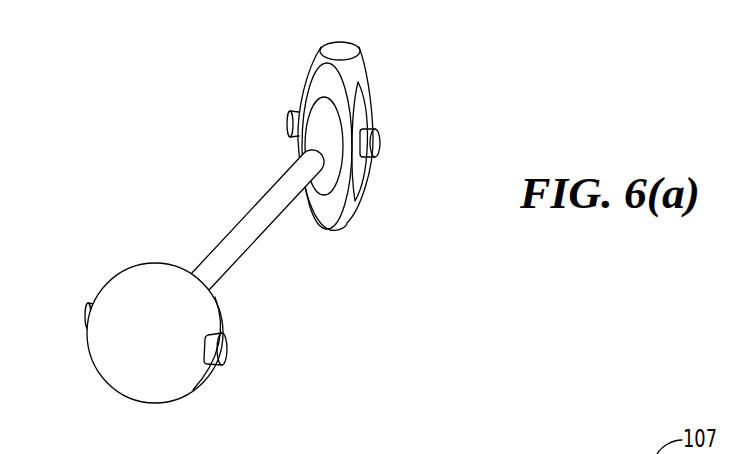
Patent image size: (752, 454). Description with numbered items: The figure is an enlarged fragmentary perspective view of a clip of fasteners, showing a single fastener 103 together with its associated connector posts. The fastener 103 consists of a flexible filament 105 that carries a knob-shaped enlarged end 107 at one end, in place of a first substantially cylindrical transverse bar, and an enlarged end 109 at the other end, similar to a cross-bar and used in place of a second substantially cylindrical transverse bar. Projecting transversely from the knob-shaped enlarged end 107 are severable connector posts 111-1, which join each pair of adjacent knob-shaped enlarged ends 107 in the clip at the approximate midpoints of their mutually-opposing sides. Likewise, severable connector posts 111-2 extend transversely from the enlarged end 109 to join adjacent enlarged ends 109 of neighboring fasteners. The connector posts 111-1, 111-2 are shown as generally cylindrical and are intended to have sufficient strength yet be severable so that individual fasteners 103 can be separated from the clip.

The fastener 103 is at (250, 230).
The flexible filament 105 is at (232, 260).
The knob-shaped enlarged end 107 is at (137, 273).
The enlarged end 109 is at (343, 215).
The severable connector post 111-1 is at (85, 314).
The severable connector post 111-2 is at (288, 121).